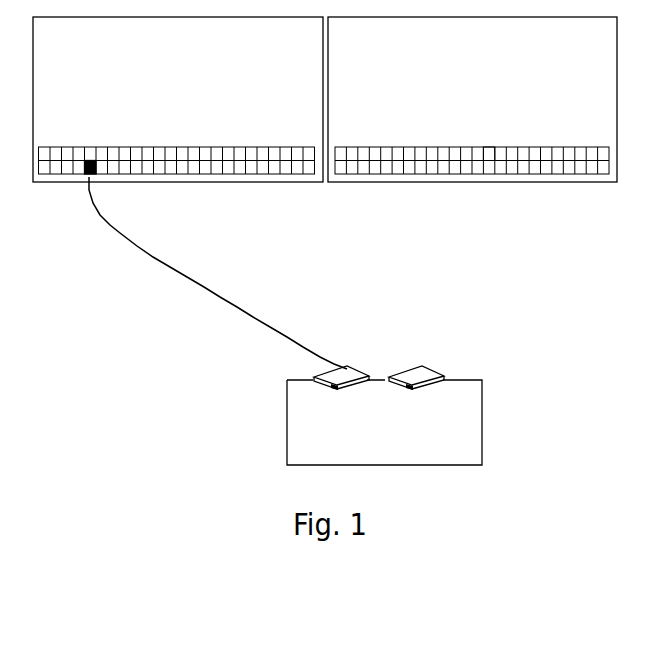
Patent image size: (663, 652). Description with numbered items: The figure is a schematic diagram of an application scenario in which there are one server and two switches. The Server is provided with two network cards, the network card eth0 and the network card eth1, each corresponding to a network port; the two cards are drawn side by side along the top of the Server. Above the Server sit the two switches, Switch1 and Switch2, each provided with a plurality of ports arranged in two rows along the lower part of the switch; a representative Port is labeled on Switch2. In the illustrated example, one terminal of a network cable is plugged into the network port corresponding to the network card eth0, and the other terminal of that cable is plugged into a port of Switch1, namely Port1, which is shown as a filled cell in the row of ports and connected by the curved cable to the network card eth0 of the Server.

The switch 1 Switch1 is at (178, 99).
The switch 2 Switch2 is at (472, 99).
The port 1 Port1 is at (91, 147).
The port Port is at (488, 155).
The server Server is at (384, 423).
The network card eth0 is at (341, 406).
The network card eth1 is at (418, 406).